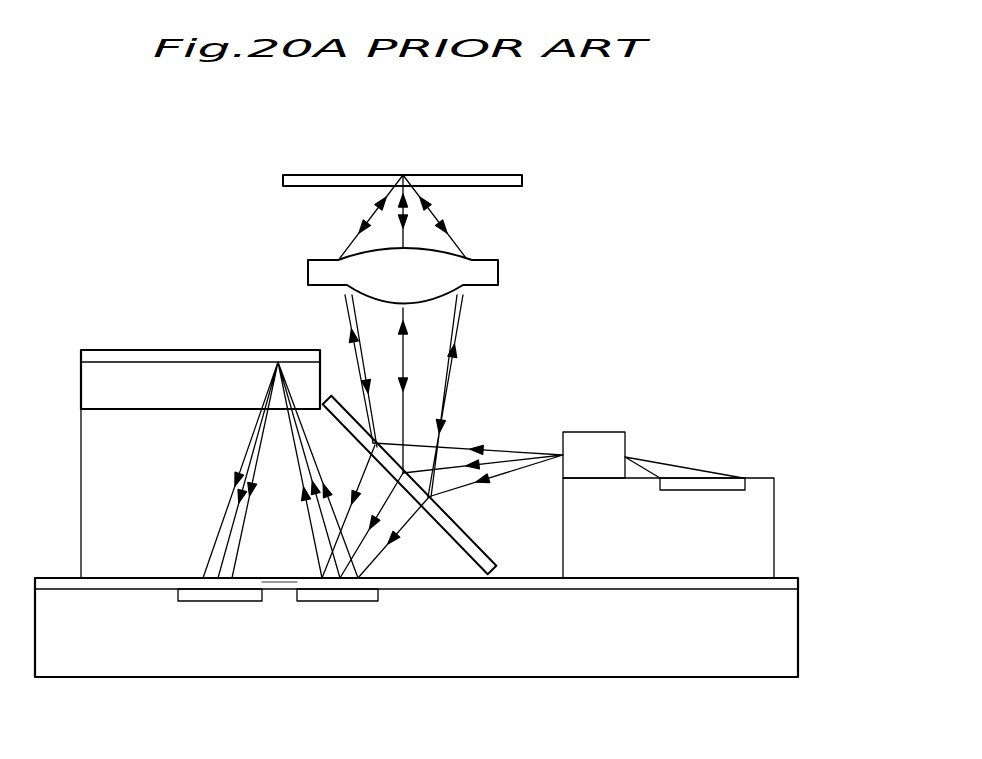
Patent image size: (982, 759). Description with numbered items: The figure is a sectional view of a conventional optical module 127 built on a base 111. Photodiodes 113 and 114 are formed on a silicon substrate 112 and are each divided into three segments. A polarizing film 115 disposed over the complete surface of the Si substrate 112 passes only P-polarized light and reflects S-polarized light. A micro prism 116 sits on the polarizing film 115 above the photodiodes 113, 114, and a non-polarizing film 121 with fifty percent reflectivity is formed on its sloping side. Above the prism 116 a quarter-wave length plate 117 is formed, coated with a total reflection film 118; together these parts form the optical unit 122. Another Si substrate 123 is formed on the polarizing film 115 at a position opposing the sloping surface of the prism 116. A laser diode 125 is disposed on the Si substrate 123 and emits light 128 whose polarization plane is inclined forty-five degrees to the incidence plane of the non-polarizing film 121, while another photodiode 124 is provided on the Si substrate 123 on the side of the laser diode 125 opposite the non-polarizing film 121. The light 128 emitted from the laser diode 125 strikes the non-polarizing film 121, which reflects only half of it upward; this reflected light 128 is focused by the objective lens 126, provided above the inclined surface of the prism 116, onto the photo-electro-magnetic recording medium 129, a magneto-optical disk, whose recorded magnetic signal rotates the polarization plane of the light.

The substrate 111 is at (640, 684).
The silicon substrate 112 is at (798, 612).
The photodiode 113 is at (342, 610).
The photodiode 114 is at (222, 610).
The polarizing film 115 is at (283, 582).
The prism 116 is at (120, 447).
The quarter-wave length plate 117 is at (187, 377).
The total reflection film 118 is at (248, 350).
The non-polarizing film 121 is at (475, 560).
The optical unit 122 is at (136, 315).
The Si substrate 123 is at (774, 543).
The photodiode 124 is at (720, 497).
The laser diode 125 is at (593, 432).
The objective lens 126 is at (498, 272).
The optical head 127 is at (565, 318).
The light 128 is at (497, 447).
The photo-electro-magnetic recording medium 129 is at (493, 175).